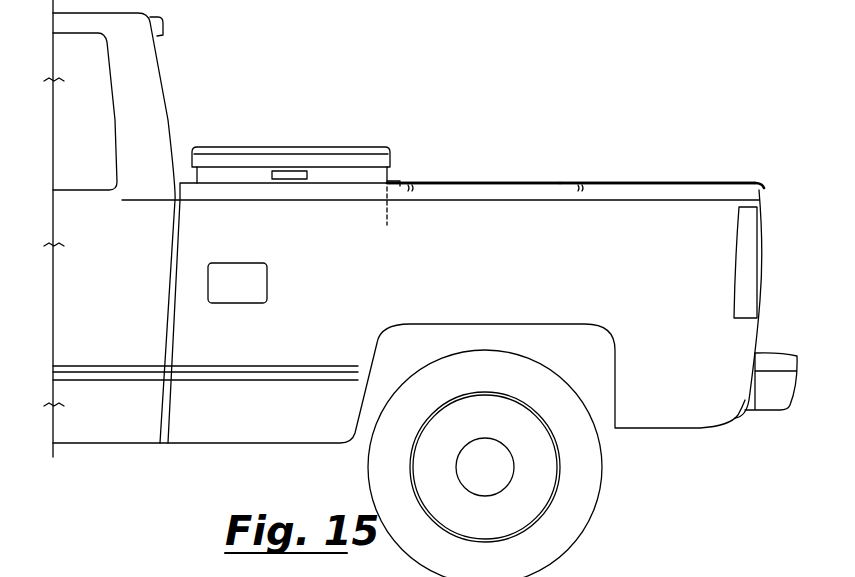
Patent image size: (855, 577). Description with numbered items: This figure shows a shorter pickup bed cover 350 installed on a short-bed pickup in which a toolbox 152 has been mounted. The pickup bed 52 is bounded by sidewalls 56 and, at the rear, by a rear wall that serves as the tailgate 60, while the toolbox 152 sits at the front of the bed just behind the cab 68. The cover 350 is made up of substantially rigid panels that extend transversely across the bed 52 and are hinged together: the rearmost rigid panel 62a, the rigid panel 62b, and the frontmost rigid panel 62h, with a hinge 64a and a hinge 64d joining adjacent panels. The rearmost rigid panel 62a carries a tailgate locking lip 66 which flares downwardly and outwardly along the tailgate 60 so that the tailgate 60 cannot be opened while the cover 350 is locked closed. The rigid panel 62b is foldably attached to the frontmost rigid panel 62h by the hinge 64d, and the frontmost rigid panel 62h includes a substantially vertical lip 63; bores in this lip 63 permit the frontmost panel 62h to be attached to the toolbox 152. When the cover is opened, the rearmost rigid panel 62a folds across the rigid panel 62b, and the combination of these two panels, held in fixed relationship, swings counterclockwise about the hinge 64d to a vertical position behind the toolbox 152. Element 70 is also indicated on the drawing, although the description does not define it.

The shorter pickup bed cover 350 is at (575, 135).
The pickup bed 52 is at (431, 288).
The sidewalls 56 is at (585, 289).
The tailgate 60 is at (763, 237).
The rearmost rigid panel 62a is at (648, 183).
The rigid panel 62b is at (478, 183).
The frontmost rigid panel 62h is at (398, 183).
The substantially vertical lip 63 is at (390, 187).
The hinge 64a is at (581, 183).
The hinge 64d is at (410, 183).
The tailgate locking lip 66 is at (762, 186).
The cab 68 is at (168, 87).
The cover panel 70 is at (697, 195).
The toolbox 152 is at (230, 147).